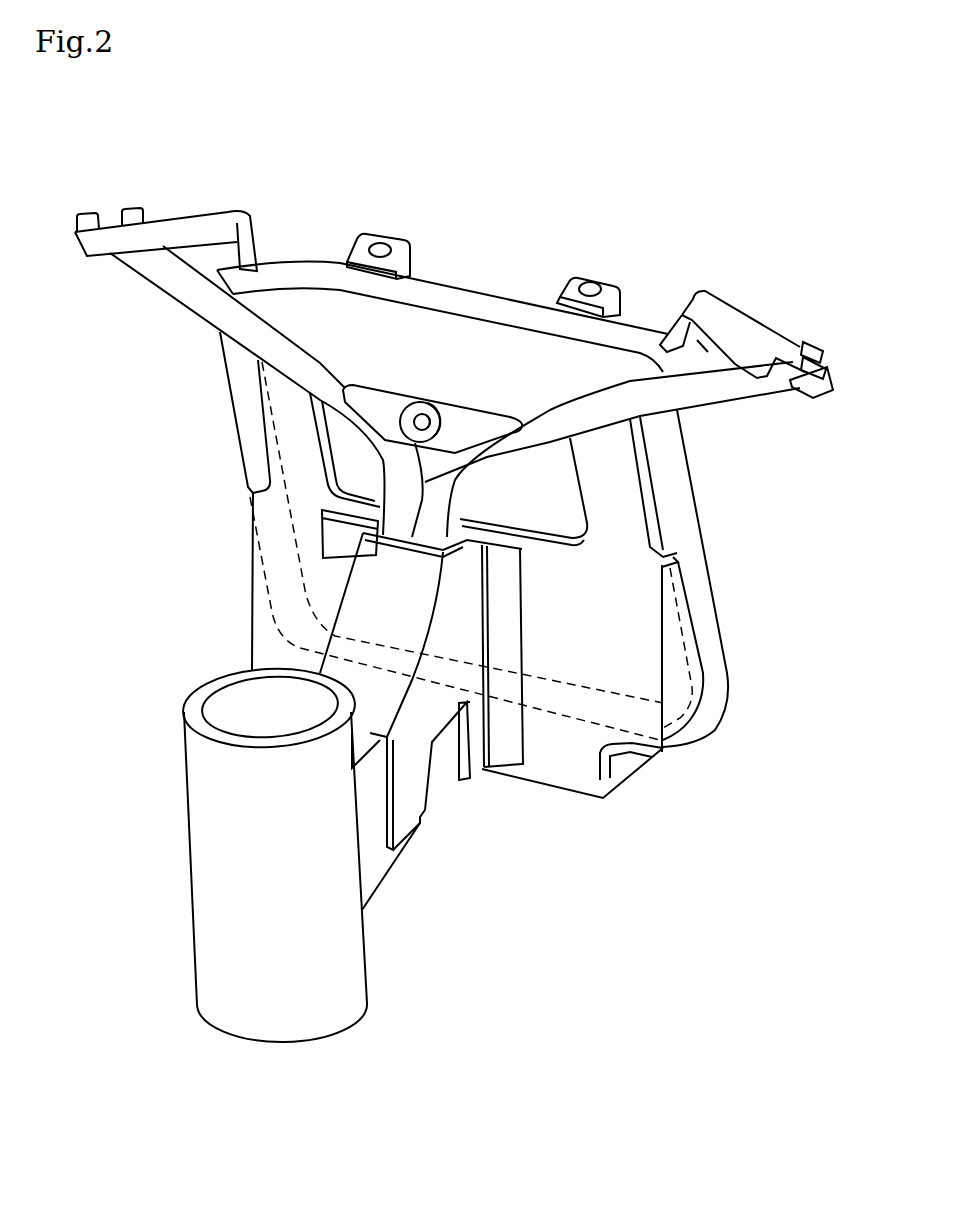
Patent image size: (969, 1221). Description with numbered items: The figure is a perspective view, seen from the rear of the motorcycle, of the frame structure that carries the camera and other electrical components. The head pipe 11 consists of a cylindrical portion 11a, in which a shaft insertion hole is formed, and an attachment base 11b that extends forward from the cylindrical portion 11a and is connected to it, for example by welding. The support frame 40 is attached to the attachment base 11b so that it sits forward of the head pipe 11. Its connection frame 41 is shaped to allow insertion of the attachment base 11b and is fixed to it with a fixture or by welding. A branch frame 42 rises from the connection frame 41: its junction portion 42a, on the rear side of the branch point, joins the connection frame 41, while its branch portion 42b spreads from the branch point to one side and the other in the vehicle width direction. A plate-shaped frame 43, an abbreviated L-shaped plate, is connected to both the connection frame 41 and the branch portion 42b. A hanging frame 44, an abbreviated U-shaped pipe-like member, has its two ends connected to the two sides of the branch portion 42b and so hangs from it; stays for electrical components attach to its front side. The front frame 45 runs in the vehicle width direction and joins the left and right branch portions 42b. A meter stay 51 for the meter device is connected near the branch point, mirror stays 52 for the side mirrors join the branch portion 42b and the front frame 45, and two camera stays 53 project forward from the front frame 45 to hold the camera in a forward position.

The head pipe 11 is at (388, 853).
The cylindrical portion 11a is at (345, 943).
The attachment base 11b is at (375, 878).
The support frame 40 is at (815, 190).
The connection frame 41 is at (420, 772).
The branch frame 42 is at (455, 391).
The junction portion 42a is at (490, 490).
The branch portion 42b is at (170, 280).
The plate-shaped frame 43 is at (580, 772).
The hanging frame 44 is at (697, 565).
The front frame 45 is at (481, 293).
The meter stay 51 is at (463, 417).
The mirror stay 52 is at (188, 227).
The camera stay 53 is at (398, 245).